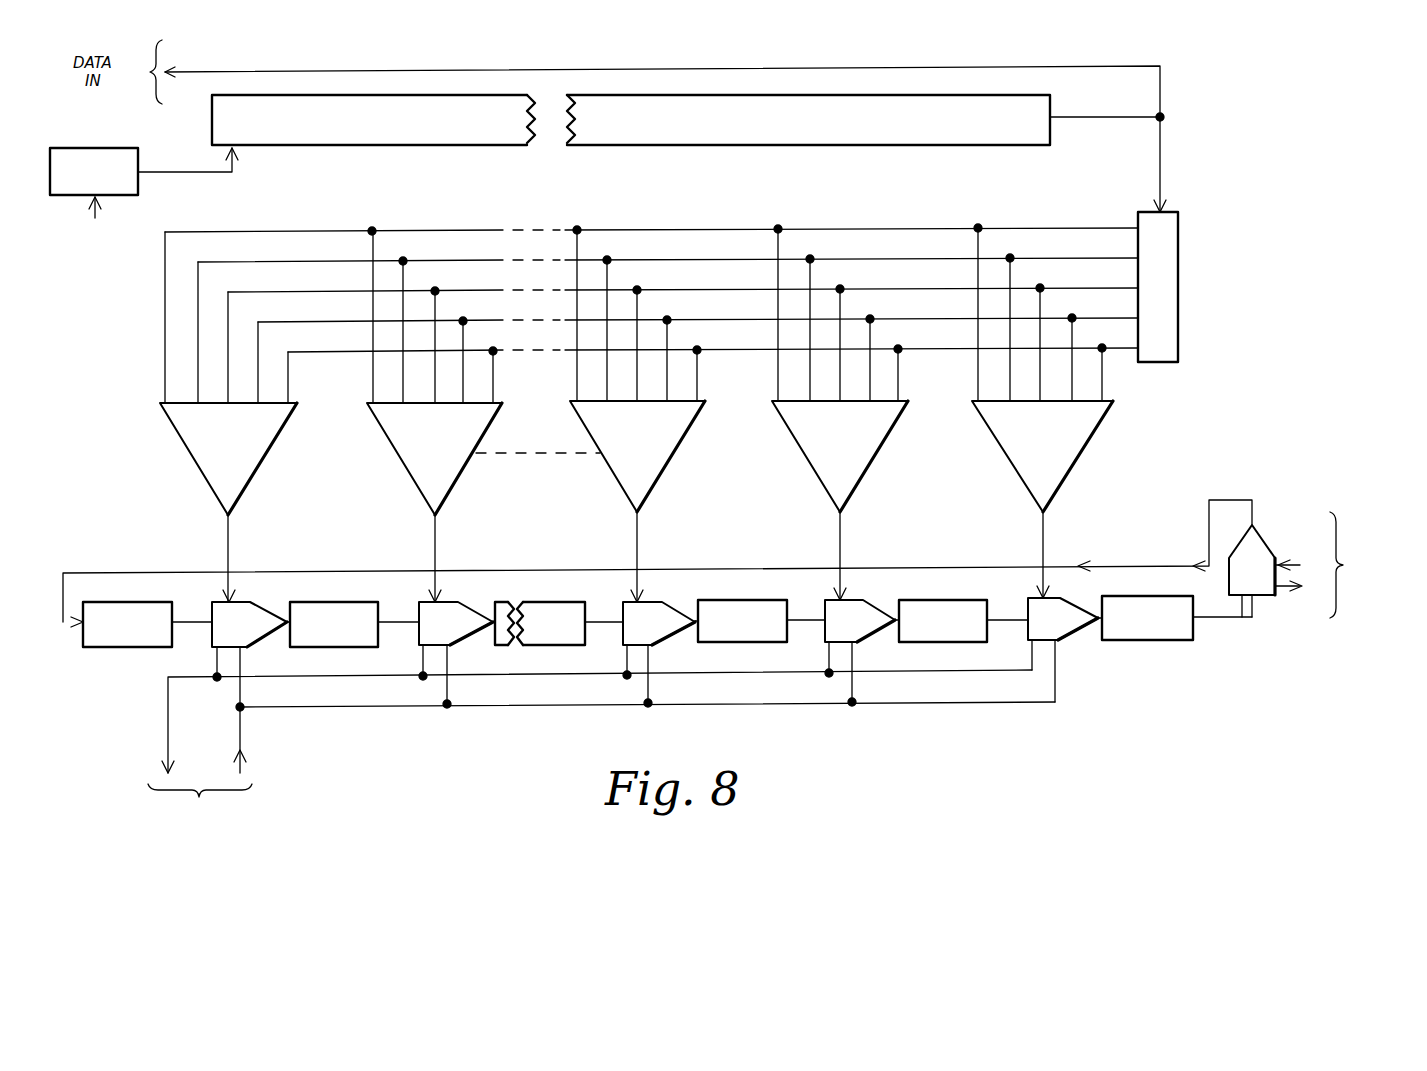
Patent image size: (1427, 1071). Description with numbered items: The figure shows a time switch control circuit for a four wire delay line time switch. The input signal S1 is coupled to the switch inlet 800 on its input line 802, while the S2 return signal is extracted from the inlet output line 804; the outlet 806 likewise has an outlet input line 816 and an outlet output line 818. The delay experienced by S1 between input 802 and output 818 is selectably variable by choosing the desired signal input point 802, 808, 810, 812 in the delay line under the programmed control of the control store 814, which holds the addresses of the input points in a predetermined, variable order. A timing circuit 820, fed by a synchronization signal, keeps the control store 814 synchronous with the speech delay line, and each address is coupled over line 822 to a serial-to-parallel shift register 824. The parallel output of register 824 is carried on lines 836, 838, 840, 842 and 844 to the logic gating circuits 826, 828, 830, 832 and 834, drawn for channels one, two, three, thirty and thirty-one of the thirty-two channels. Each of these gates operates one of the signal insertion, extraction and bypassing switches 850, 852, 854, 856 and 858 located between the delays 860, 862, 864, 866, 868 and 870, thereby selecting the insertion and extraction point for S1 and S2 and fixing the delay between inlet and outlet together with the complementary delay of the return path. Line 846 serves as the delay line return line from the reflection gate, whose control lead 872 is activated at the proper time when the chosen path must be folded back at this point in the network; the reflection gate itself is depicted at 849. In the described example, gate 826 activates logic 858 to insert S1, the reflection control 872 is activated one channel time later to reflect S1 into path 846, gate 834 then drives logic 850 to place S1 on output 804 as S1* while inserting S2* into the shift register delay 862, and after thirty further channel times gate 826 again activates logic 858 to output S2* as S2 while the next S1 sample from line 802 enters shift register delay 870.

The switch inlet 800 is at (212, 809).
The inlet input line 802 is at (240, 731).
The inlet output line 804 is at (168, 733).
The outlet 806 is at (1369, 565).
The signal input point 808 is at (425, 712).
The signal input point 810 is at (646, 712).
The signal input point 812 is at (850, 710).
The control store 814 is at (723, 99).
The outlet input line 816 is at (1290, 564).
The outlet output line 818 is at (1282, 592).
The timing circuit 820 is at (84, 151).
The line 822 is at (1072, 121).
The serial-to-parallel shift register 824 is at (1176, 245).
The logic gating circuit 826 is at (1012, 464).
The logic gating circuit 828 is at (810, 465).
The logic gating circuit 830 is at (616, 468).
The logic gating circuit 832 is at (407, 464).
The logic gating circuit 834 is at (187, 461).
The line 836 is at (869, 232).
The line 838 is at (864, 264).
The line 840 is at (862, 294).
The line 842 is at (880, 324).
The line 844 is at (904, 354).
The delay line return line 846 is at (709, 567).
The reflect element 849 is at (1242, 540).
The signal insertion, extraction and bypassing switch 850 is at (249, 605).
The signal insertion, extraction and bypassing switch 852 is at (449, 603).
The signal insertion, extraction and bypassing switch 854 is at (649, 601).
The signal insertion, extraction and bypassing switch 856 is at (853, 599).
The signal insertion, extraction and bypassing switch 858 is at (1032, 596).
The delay 860 is at (103, 605).
The shift register delay line 862 is at (309, 605).
The delay 864 is at (578, 600).
The delay 866 is at (725, 601).
The delay 868 is at (952, 598).
The shift register delay 870 is at (1122, 596).
The control lead 872 is at (1240, 620).